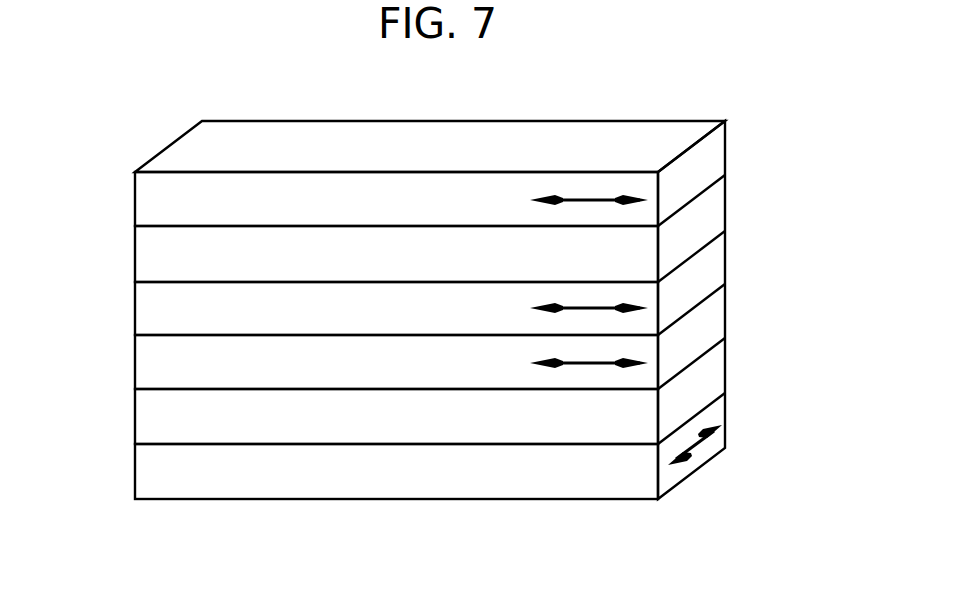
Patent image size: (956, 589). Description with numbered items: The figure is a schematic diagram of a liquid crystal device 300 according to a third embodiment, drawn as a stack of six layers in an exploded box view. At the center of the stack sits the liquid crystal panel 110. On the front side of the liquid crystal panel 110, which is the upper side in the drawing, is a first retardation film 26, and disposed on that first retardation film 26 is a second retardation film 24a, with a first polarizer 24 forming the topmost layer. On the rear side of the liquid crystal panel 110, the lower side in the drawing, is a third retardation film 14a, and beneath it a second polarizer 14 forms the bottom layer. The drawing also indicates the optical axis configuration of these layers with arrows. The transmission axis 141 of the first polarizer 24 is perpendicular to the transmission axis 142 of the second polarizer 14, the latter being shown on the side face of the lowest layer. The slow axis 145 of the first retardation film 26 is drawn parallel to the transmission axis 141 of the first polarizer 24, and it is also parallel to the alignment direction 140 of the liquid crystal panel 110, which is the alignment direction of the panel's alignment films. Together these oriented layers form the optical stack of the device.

The liquid crystal device 300 is at (697, 108).
The first polarizer 24 is at (135, 201).
The second retardation film 24a is at (135, 254).
The first retardation film 26 is at (135, 307).
The liquid crystal panel 110 is at (135, 357).
The third retardation film 14a is at (135, 414).
The second polarizer 14 is at (135, 470).
The transmission axis of the first polarizer 141 is at (588, 201).
The slow axis of the first retardation film 145 is at (595, 308).
The alignment direction of the liquid crystal panel 140 is at (595, 358).
The transmission axis of the second polarizer 142 is at (693, 448).